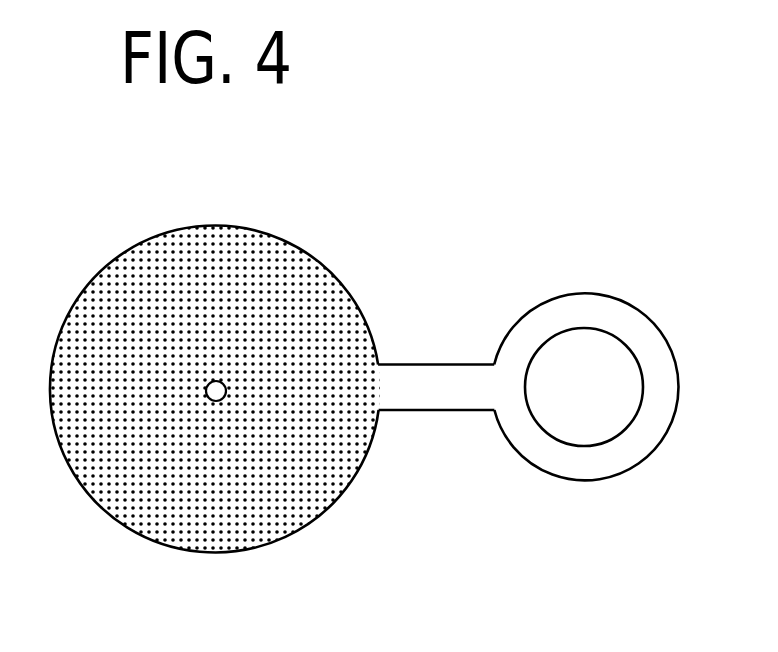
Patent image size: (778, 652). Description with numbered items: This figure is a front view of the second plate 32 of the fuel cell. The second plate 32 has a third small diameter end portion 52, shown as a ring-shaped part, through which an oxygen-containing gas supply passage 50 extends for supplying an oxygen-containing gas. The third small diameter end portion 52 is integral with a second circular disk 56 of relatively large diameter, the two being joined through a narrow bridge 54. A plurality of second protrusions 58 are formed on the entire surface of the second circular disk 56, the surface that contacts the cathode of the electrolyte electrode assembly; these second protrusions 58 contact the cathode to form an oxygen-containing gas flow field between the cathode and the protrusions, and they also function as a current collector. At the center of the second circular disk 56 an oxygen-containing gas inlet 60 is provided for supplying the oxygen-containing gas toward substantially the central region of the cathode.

The second plate 32 is at (475, 147).
The oxygen-containing gas supply passage 50 is at (622, 403).
The third small diameter end portion 52 is at (578, 293).
The narrow bridge 54 is at (441, 364).
The second circular disk 56 is at (312, 240).
The second protrusions 58 is at (97, 457).
The oxygen-containing gas inlet 60 is at (207, 380).